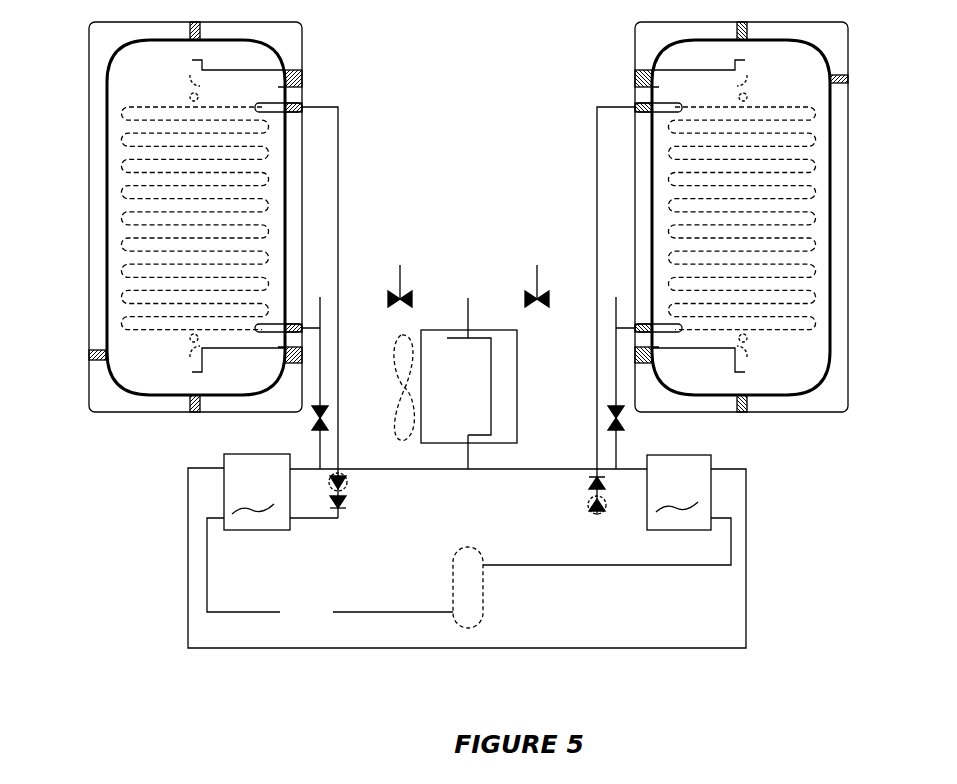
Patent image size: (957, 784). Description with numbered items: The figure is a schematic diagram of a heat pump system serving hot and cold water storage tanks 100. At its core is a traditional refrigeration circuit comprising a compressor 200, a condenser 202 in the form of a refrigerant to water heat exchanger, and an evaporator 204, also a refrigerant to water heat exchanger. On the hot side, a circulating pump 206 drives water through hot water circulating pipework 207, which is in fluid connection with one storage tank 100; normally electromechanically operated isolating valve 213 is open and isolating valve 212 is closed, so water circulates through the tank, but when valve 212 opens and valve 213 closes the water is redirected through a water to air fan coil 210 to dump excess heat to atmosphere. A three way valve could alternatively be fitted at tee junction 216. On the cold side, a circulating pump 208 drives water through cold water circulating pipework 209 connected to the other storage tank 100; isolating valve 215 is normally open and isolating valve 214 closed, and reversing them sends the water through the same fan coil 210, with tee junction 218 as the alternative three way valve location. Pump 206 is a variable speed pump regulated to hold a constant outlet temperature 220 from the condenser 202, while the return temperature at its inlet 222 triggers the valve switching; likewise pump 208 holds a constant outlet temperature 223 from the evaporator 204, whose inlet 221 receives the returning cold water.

The storage tank 100 is at (89, 235).
The compressor 200 is at (470, 593).
The condenser 202 is at (679, 492).
The evaporator 204 is at (257, 492).
The circulating pump 206 is at (590, 503).
The hot water circulating pipework 207 is at (596, 380).
The circulating pump 208 is at (347, 483).
The cold water circulating pipework 209 is at (337, 142).
The water to air fan coil 210 is at (517, 382).
The electromechanically operated isolating valve 212 is at (537, 274).
The electromechanically operated isolating valve 213 is at (622, 422).
The electromechanically operated isolating valve 214 is at (400, 274).
The electromechanically operated isolating valve 215 is at (318, 420).
The tee junction 216 is at (596, 298).
The tee junction 218 is at (320, 327).
The outlet temperature 220 is at (644, 518).
The inlet 221 is at (287, 518).
The inlet 222 is at (647, 468).
The outlet temperature 223 is at (285, 467).